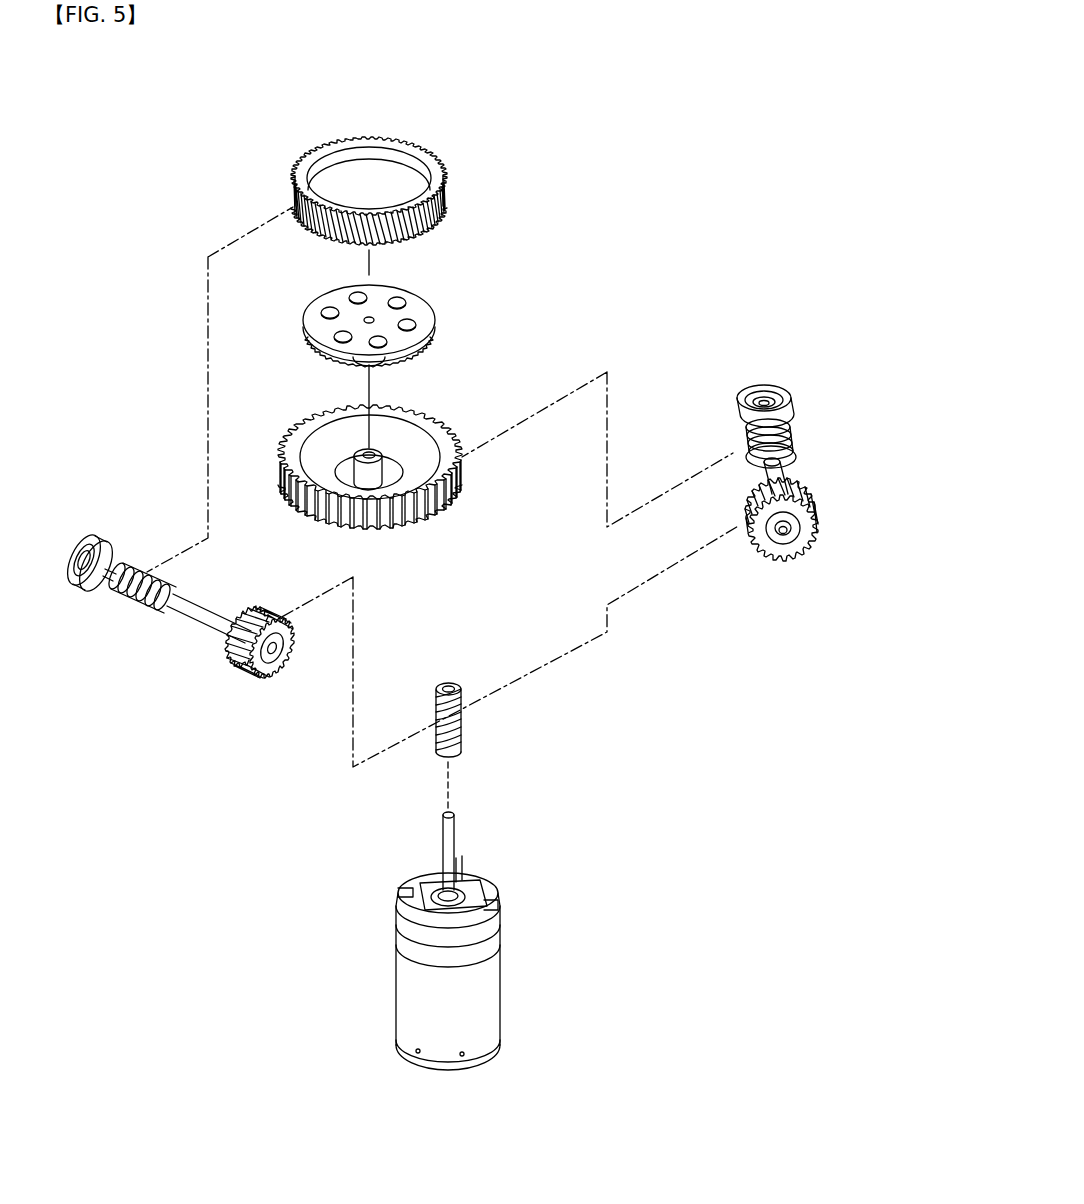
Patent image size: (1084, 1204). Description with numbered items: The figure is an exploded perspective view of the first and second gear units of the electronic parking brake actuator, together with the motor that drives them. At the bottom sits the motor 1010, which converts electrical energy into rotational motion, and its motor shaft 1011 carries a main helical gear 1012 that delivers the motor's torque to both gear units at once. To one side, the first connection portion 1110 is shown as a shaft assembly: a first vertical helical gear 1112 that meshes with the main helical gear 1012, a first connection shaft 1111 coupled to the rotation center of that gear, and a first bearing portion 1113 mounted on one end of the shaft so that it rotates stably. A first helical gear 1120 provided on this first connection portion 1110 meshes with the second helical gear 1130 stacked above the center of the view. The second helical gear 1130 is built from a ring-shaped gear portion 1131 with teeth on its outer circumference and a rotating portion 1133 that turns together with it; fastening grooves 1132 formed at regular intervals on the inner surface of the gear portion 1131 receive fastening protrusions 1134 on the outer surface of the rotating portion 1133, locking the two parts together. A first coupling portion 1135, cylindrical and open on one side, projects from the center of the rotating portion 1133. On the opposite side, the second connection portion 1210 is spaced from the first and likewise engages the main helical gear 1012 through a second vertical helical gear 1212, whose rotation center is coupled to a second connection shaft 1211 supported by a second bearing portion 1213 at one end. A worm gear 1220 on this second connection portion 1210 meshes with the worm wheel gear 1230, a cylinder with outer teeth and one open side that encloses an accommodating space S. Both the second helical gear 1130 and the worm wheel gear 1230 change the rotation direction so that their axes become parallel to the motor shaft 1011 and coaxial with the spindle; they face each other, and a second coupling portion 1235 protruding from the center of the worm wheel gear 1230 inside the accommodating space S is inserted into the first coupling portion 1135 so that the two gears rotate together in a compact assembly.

The motor 1010 is at (492, 988).
The motor shaft 1011 is at (449, 827).
The main helical gear 1012 is at (462, 727).
The first connection portion 1110 is at (181, 715).
The first connection shaft 1111 is at (190, 614).
The first vertical helical gear 1112 is at (236, 663).
The first bearing portion 1113 is at (74, 582).
The first helical gear 1120 is at (142, 572).
The second helical gear 1130 is at (518, 178).
The gear portion 1131 is at (445, 181).
The fastening grooves 1132 is at (371, 142).
The rotating portion 1133 is at (423, 318).
The fastening protrusions 1134 is at (437, 326).
The first coupling portion 1135 is at (352, 360).
The second connection portion 1210 is at (894, 395).
The second connection shaft 1211 is at (773, 468).
The second vertical helical gear 1212 is at (805, 504).
The second bearing portion 1213 is at (784, 402).
The worm gear 1220 is at (743, 426).
The worm wheel gear 1230 is at (312, 516).
The second coupling portion 1235 is at (378, 455).
The accommodating space S is at (325, 457).